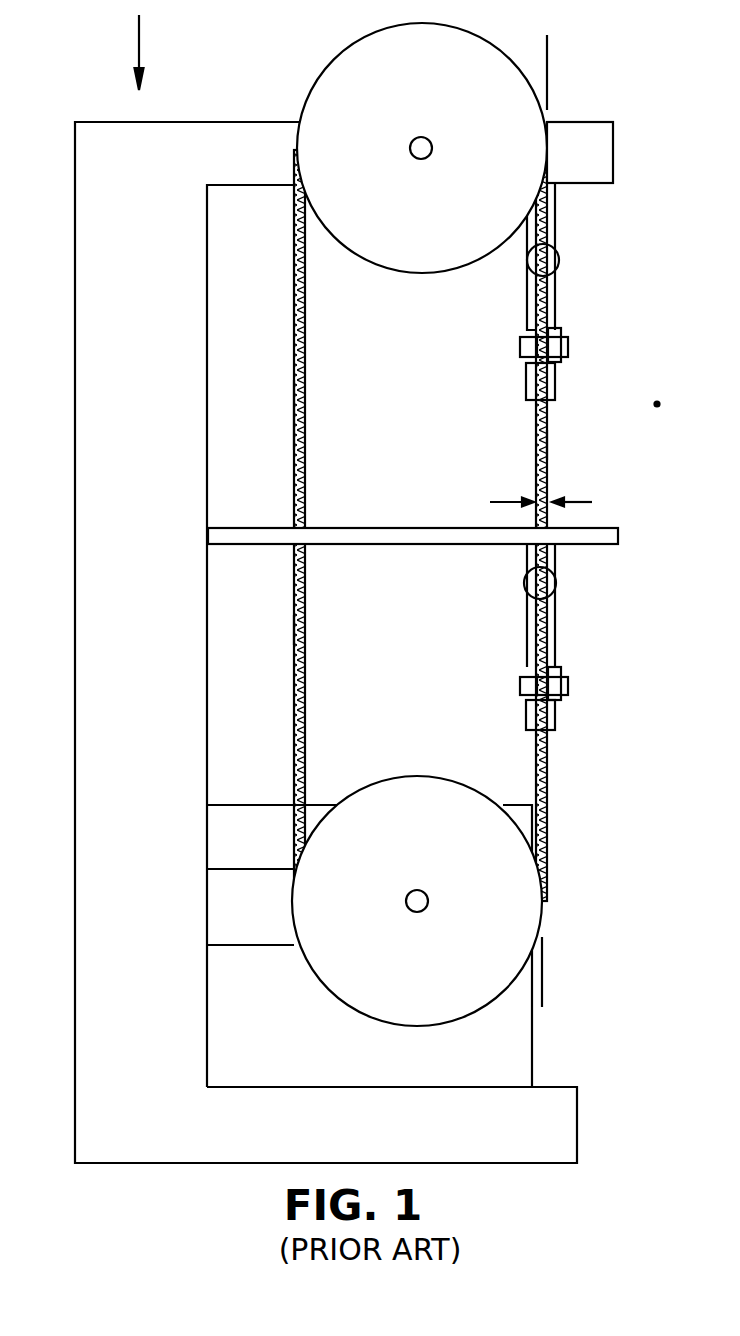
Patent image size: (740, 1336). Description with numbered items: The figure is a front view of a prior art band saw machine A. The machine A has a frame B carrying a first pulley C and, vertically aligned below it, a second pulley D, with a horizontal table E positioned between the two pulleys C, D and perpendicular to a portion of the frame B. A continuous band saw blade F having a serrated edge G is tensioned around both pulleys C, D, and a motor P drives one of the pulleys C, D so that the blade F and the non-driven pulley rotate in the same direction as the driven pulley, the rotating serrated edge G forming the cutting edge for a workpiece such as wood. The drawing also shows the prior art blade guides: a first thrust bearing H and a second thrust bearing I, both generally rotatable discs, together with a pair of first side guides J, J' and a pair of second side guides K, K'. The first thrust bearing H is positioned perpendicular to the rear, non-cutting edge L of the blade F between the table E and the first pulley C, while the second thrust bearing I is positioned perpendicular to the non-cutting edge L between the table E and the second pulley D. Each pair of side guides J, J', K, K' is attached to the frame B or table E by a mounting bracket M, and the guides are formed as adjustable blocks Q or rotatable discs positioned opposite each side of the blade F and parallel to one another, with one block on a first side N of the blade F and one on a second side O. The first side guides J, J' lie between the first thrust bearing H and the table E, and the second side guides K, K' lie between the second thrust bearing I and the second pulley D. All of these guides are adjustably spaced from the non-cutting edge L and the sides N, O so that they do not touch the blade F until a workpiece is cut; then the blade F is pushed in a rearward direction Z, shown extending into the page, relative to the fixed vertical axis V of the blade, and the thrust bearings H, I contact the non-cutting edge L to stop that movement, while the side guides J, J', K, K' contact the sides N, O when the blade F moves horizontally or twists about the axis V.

The band saw machine A is at (139, 45).
The frame B is at (105, 500).
The first pulley C is at (355, 65).
The second pulley D is at (385, 806).
The horizontal table E is at (384, 543).
The band saw blade F is at (305, 467).
The serrated edge G is at (305, 412).
The first thrust bearing H is at (560, 260).
The second thrust bearing I is at (557, 583).
The first side guide J is at (524, 317).
The first side guide J' is at (590, 319).
The second side guide K is at (516, 674).
The second side guide K' is at (591, 683).
The non-cutting edge L is at (548, 446).
The mounting bracket M is at (556, 210).
The first side N is at (499, 502).
The second side O is at (585, 502).
The motor P is at (248, 1022).
The adjustable block Q is at (569, 346).
The fixed vertical axis V is at (550, 70).
The rearward direction Z is at (671, 407).